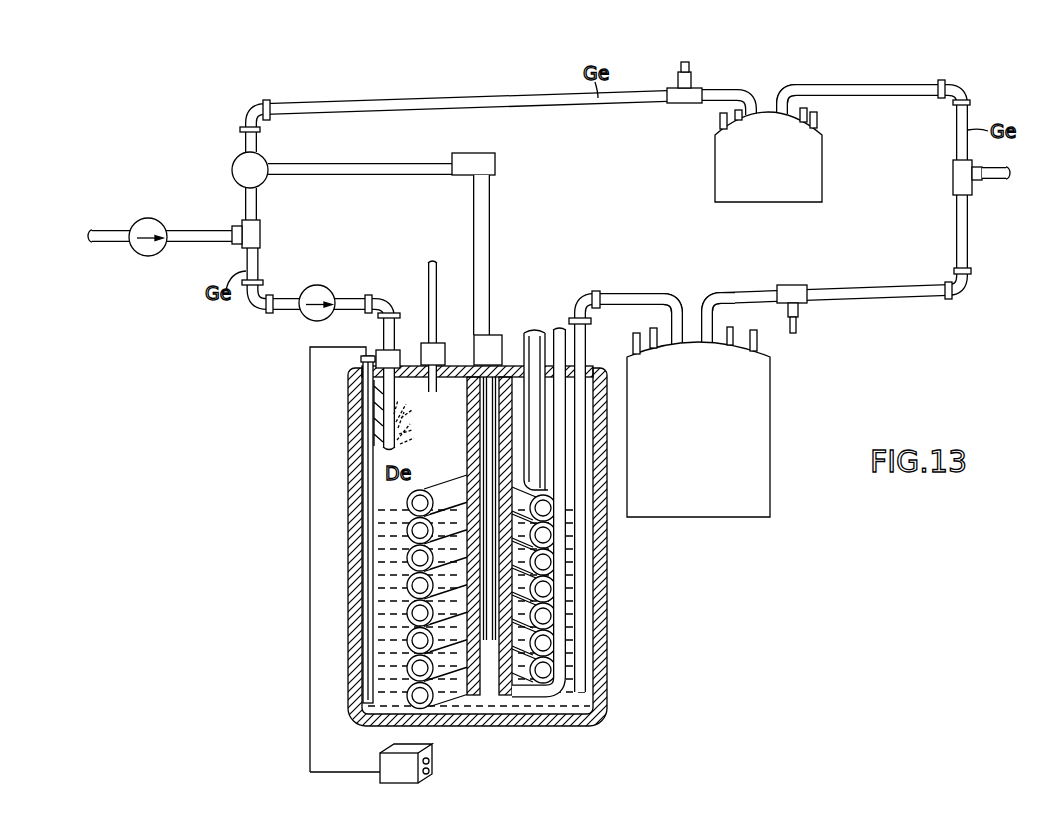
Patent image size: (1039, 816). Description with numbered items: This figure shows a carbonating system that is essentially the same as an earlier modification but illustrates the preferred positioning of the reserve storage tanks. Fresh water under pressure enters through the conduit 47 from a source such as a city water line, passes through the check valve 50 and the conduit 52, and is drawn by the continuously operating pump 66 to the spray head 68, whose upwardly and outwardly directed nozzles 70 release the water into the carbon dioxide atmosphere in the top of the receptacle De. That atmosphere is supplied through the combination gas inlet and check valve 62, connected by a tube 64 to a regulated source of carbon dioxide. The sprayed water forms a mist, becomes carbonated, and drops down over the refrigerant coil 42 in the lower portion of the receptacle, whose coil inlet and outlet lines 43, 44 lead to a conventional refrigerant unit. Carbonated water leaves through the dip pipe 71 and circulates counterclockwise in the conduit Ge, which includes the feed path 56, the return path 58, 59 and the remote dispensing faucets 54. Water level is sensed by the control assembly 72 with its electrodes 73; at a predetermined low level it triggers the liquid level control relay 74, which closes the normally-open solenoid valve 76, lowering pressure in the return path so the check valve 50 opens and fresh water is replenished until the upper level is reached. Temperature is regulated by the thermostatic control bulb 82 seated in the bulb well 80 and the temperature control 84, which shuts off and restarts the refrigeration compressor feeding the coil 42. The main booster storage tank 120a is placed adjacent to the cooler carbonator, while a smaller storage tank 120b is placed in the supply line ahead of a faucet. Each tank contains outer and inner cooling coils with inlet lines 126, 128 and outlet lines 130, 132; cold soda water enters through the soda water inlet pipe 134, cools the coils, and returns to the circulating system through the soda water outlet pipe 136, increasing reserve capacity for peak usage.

The refrigerant coil 42 is at (556, 566).
The coil inlet line 43 is at (533, 333).
The coil outlet line 44 is at (559, 330).
The fresh water conduit 47 is at (120, 230).
The check valve 50 is at (161, 223).
The conduit 52 is at (198, 242).
The remote dispensing faucet 54 is at (700, 88).
The feed path 56 is at (839, 212).
The return path 58 is at (445, 102).
The return path 59 is at (259, 261).
The combination gas inlet and check valve 62 is at (443, 348).
The tube 64 is at (436, 272).
The pump 66 is at (330, 290).
The spray head 68 is at (396, 444).
The nozzles 70 is at (406, 416).
The dip pipe 71 is at (604, 662).
The control assembly 72 is at (503, 338).
The electrodes 73 is at (497, 453).
The liquid level control relay 74 is at (495, 162).
The solenoid valve 76 is at (264, 157).
The bulb well 80 is at (372, 445).
The thermostatic control bulb 82 is at (377, 648).
The temperature control 84 is at (440, 750).
The storage tank 120a is at (770, 443).
The storage tank 120b is at (822, 158).
The inlet line 126 is at (817, 124).
The inlet line 128 is at (807, 112).
The outlet line 130 is at (720, 125).
The outlet line 132 is at (734, 113).
The soda water inlet pipe 134 is at (788, 100).
The soda water outlet pipe 136 is at (750, 90).